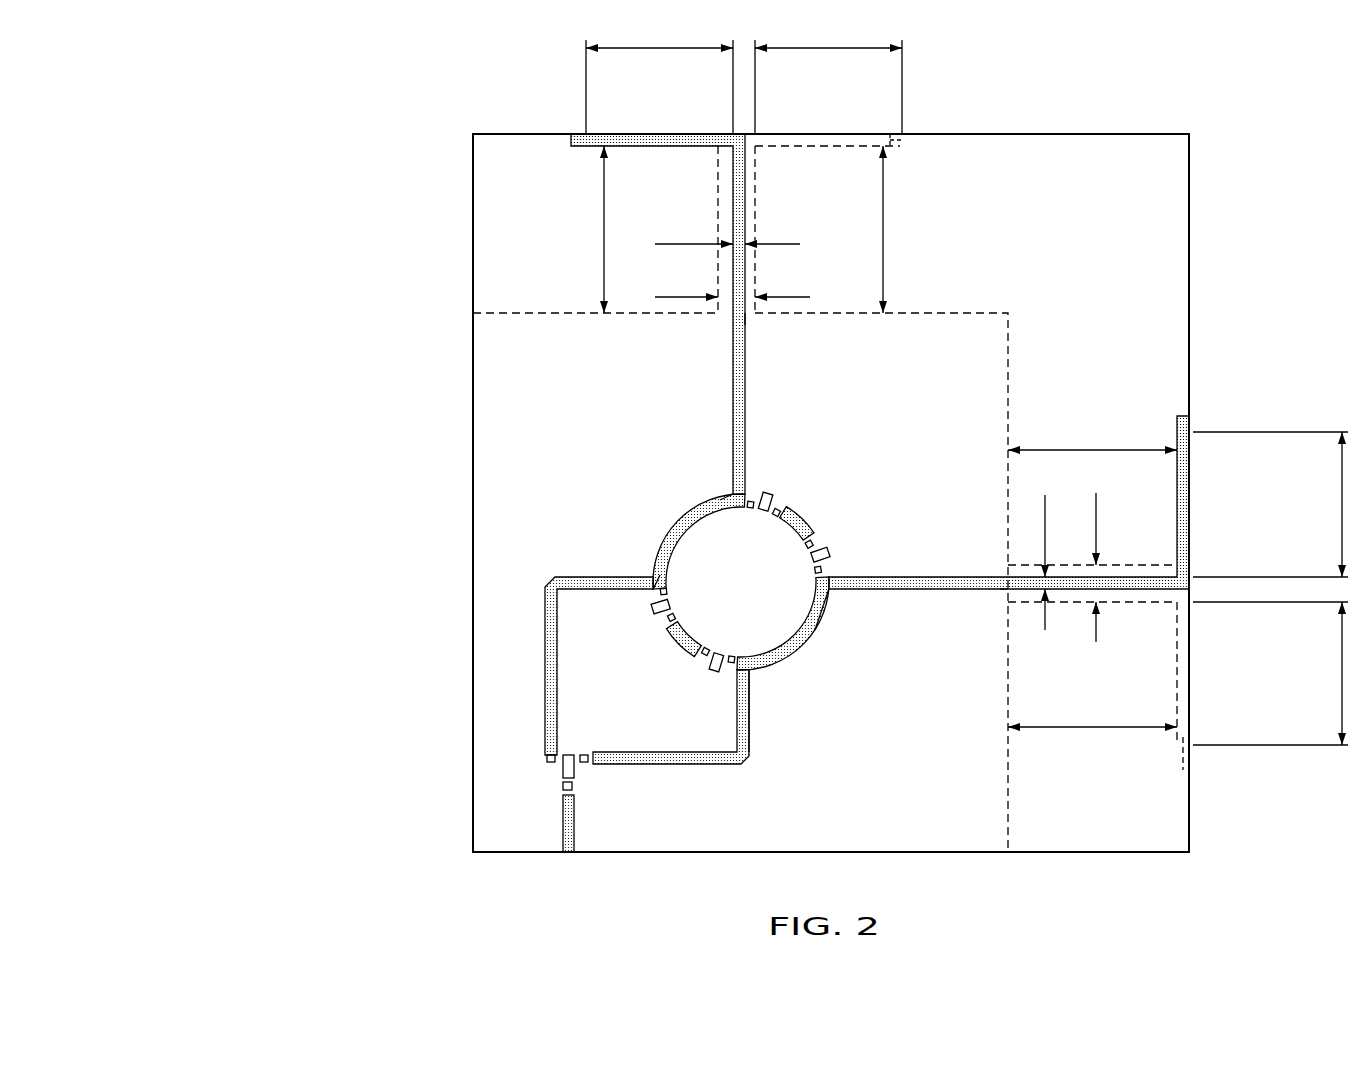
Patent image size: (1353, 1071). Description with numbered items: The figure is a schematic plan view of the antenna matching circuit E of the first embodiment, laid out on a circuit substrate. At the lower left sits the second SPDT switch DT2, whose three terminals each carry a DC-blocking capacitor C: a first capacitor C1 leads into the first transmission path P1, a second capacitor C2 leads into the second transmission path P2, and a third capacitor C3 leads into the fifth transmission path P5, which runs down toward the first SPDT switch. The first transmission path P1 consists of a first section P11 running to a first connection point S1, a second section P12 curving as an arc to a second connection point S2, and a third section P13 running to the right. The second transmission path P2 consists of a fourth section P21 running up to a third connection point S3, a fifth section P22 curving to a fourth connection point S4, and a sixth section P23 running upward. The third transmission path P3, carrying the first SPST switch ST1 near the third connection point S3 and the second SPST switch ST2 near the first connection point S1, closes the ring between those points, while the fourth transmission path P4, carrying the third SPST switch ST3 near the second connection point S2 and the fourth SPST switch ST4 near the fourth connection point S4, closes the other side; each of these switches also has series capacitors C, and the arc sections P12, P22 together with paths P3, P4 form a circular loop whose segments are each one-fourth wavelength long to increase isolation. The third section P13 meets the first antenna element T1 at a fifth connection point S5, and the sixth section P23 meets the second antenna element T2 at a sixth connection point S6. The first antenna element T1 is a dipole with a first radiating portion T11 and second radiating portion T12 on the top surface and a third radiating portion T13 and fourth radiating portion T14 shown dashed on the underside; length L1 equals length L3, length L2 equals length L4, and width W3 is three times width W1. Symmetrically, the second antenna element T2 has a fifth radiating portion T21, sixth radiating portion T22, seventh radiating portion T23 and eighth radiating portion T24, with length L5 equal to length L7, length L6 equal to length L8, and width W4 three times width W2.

The antenna matching circuit E is at (386, 105).
The first transmission path P1 is at (657, 477).
The first section P11 is at (680, 765).
The second section P12 is at (815, 640).
The third section P13 is at (970, 577).
The second transmission path P2 is at (435, 444).
The fourth section P21 is at (545, 638).
The fifth section P22 is at (688, 515).
The sixth section P23 is at (733, 356).
The third transmission path P3 is at (687, 645).
The fourth transmission path P4 is at (808, 527).
The fifth transmission path P5 is at (570, 838).
The first SPST switch ST1 is at (651, 606).
The second SPST switch ST2 is at (712, 680).
The third SPST switch ST3 is at (830, 554).
The fourth SPST switch ST4 is at (766, 494).
The capacitor C is at (763, 513).
The first capacitor C1 is at (584, 753).
The second capacitor C2 is at (547, 757).
The third capacitor C3 is at (575, 786).
The second SPDT switch DT2 is at (563, 769).
The first connection point S1 is at (755, 672).
The second connection point S2 is at (826, 601).
The third connection point S3 is at (660, 580).
The fourth connection point S4 is at (727, 497).
The fifth connection point S5 is at (1000, 590).
The sixth connection point S6 is at (745, 322).
The first antenna element T1 is at (695, 583).
The first radiating portion T11 is at (1158, 582).
The second radiating portion T12 is at (1180, 415).
The third radiating portion T13 is at (1137, 600).
The fourth radiating portion T14 is at (1183, 770).
The second antenna element T2 is at (544, 396).
The fifth radiating portion T21 is at (733, 167).
The sixth radiating portion T22 is at (571, 140).
The seventh radiating portion T23 is at (750, 190).
The eighth radiating portion T24 is at (900, 140).
The length of the first radiating portion L1 is at (1092, 432).
The length of the second radiating portion L2 is at (1270, 504).
The length of the third radiating portion L3 is at (1092, 710).
The length of the fourth radiating portion L4 is at (1270, 673).
The length of the fifth radiating portion L5 is at (587, 229).
The length of the sixth radiating portion L6 is at (659, 74).
The length of the seventh radiating portion L7 is at (866, 229).
The length of the eighth radiating portion L8 is at (828, 74).
The width of the first radiating portion W1 is at (1031, 562).
The width of the fifth radiating portion W2 is at (724, 231).
The width of the third radiating portion W3 is at (1083, 567).
The width of the seventh radiating portion W4 is at (729, 284).